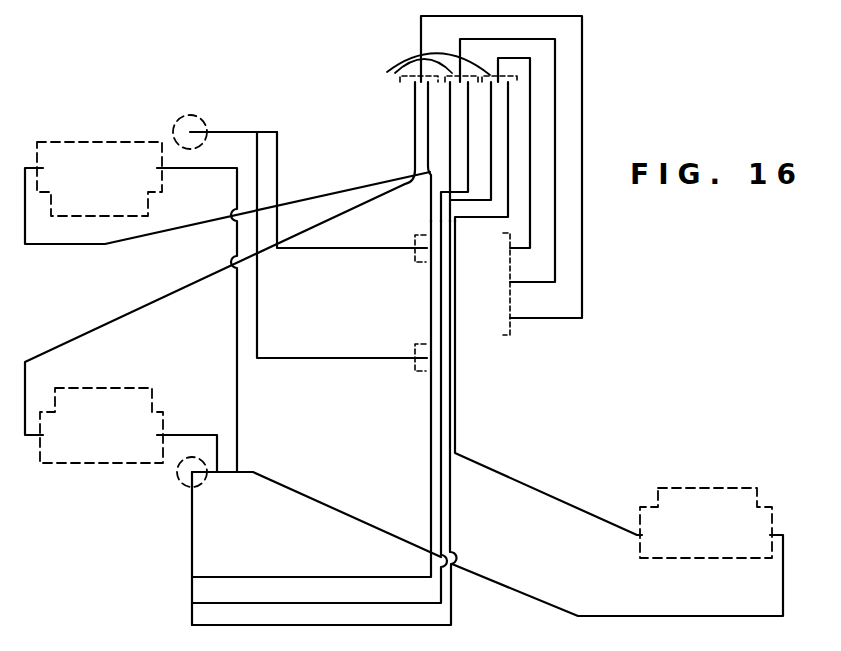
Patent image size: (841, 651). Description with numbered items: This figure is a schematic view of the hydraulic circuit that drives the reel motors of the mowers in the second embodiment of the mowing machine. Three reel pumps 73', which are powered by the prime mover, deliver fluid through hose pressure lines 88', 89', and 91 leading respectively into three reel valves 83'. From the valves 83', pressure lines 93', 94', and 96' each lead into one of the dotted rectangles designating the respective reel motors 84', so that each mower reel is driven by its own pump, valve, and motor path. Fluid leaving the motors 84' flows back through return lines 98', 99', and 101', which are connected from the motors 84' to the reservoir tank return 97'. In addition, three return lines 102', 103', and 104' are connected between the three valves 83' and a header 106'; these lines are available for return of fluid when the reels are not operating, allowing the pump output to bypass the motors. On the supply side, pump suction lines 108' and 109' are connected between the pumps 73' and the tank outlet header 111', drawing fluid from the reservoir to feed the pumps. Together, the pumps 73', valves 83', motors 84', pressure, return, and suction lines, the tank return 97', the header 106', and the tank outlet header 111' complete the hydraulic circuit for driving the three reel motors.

The reel pumps 73' is at (484, 284).
The reel valves 83' is at (441, 137).
The reel motors 84' is at (404, 334).
The hose pressure line 88' is at (568, 153).
The hose pressure line 89' is at (553, 160).
The hose pressure line 91 is at (582, 138).
The pressure line 93' is at (548, 377).
The pressure line 94' is at (227, 217).
The pressure line 96' is at (215, 309).
The reservoir tank return 97' is at (176, 494).
The return line 98' is at (188, 433).
The return line 99' is at (223, 320).
The return line 101' is at (316, 514).
The return line 102' is at (311, 398).
The return line 103' is at (319, 411).
The return line 104' is at (487, 435).
The header 106' is at (168, 548).
The pump suction line 108' is at (352, 216).
The pump suction line 109' is at (342, 251).
The tank outlet header 111' is at (225, 118).